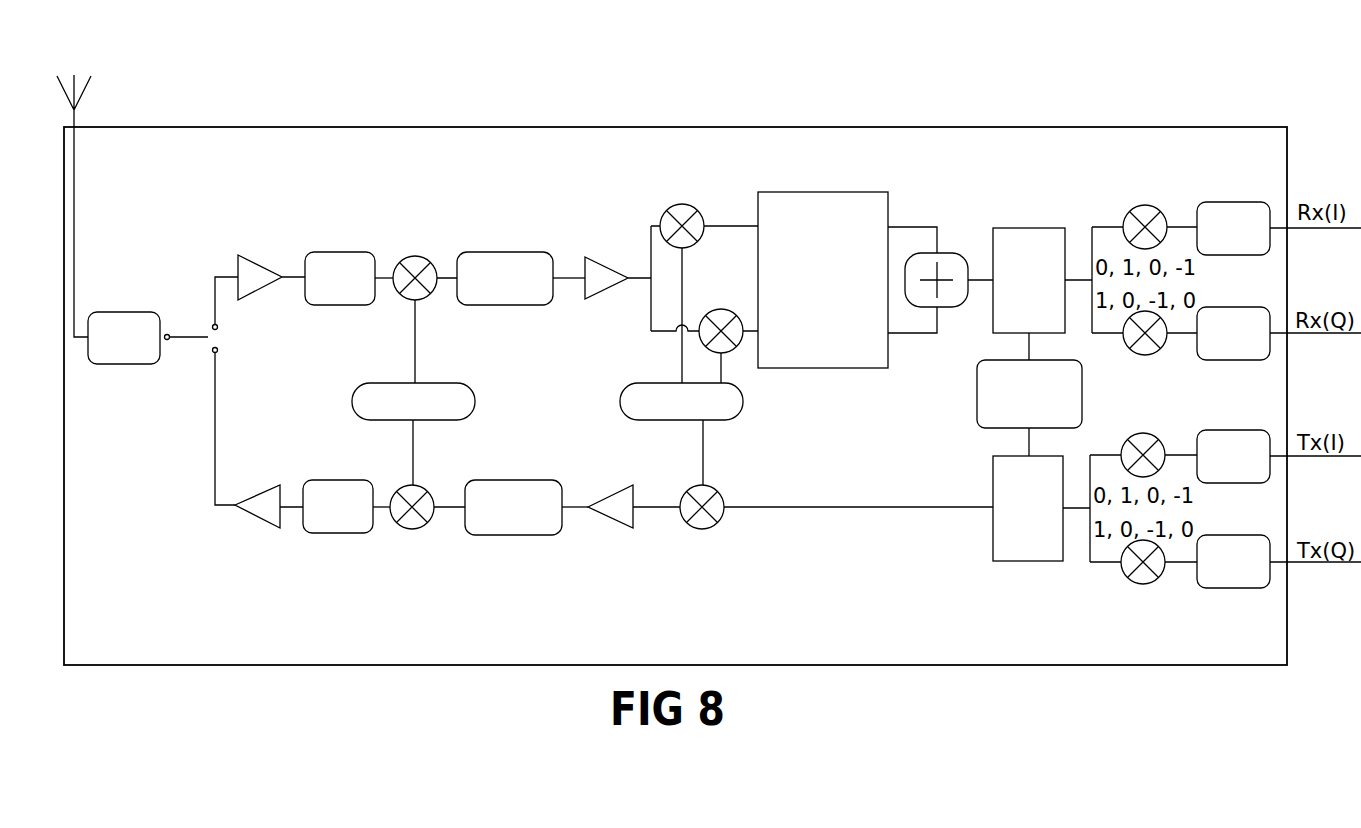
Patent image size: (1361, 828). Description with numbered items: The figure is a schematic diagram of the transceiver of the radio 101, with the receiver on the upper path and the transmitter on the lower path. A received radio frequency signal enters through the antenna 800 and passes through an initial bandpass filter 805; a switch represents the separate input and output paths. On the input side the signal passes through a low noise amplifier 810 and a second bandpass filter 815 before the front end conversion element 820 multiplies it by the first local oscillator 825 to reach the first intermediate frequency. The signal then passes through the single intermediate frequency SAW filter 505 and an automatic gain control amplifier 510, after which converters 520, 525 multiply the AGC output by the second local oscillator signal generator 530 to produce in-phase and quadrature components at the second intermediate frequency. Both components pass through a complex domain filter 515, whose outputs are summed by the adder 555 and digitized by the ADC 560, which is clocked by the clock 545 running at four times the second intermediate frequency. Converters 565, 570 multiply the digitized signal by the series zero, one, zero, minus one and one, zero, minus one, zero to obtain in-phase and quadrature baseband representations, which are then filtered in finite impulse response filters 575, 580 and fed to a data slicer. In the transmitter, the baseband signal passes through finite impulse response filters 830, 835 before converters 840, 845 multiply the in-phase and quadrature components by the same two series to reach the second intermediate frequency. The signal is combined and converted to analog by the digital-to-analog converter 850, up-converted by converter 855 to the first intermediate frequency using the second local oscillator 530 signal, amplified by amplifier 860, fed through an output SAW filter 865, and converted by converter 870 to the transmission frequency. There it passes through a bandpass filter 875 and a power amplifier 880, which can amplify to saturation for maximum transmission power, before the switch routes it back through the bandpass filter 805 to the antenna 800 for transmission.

The radio 101 is at (1268, 662).
The antenna 800 is at (83, 96).
The initial bandpass filter 805 is at (140, 365).
The low noise amplifier 810 is at (252, 252).
The second bandpass filter 815 is at (340, 252).
The front end conversion element 820 is at (415, 256).
The first local oscillator 825 is at (375, 383).
The intermediate frequency SAW filter 505 is at (500, 305).
The automatic gain control amplifier 510 is at (597, 257).
The complex domain filter 515 is at (825, 192).
The converter 520 is at (670, 206).
The converter 525 is at (733, 349).
The second local oscillator signal generator 530 is at (667, 383).
The adder 555 is at (968, 270).
The analog-to-digital converter 560 is at (1029, 228).
The converter 565 is at (1125, 208).
The converter 570 is at (1155, 355).
The finite impulse response filter 575 is at (1218, 202).
The finite impulse response filter 580 is at (1215, 360).
The clock 545 is at (988, 428).
The converter 840 is at (1148, 433).
The finite impulse response filter 830 is at (1210, 482).
The finite impulse response filter 835 is at (1230, 588).
The converter 845 is at (1140, 584).
The digital-to-analog converter 850 is at (1027, 561).
The converter 855 is at (700, 529).
The amplifier 860 is at (625, 528).
The output SAW filter 865 is at (527, 480).
The converter 870 is at (410, 529).
The bandpass filter 875 is at (340, 480).
The power amplifier 880 is at (262, 523).